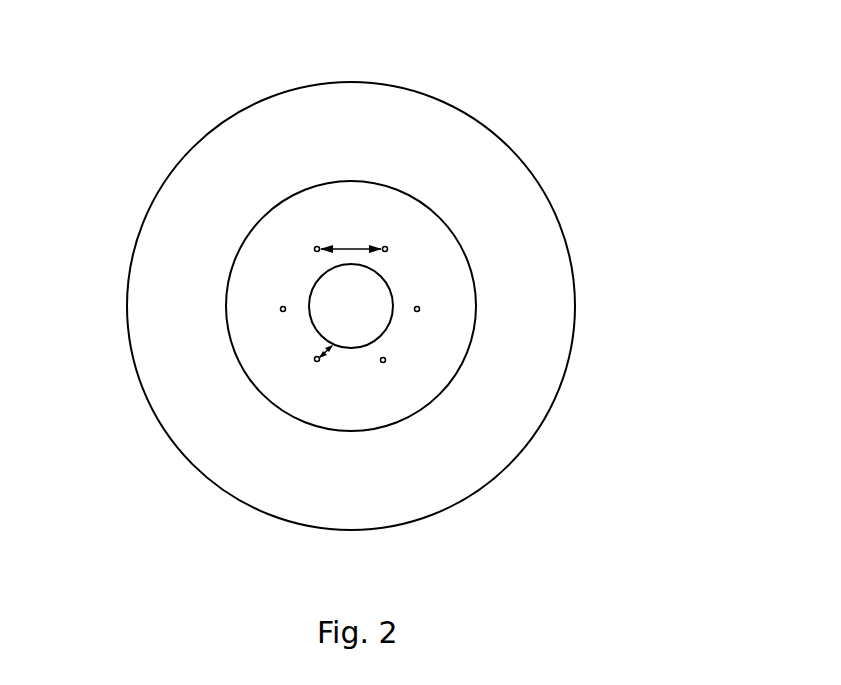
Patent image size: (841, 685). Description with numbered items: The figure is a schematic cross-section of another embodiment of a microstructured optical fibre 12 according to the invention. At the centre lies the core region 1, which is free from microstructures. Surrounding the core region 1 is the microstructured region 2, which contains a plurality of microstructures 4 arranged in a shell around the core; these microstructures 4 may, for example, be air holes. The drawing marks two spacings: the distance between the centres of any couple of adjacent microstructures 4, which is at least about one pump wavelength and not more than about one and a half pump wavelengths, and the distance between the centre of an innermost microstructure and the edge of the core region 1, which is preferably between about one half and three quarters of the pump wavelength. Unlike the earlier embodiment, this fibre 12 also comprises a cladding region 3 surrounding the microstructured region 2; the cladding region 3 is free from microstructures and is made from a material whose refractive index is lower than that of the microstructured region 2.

The core region 1 is at (521, 274).
The microstructured region 2 is at (458, 308).
The cladding region 3 is at (383, 329).
The microstructures 4 is at (253, 336).
The microstructured optical fibre 12 is at (386, 306).